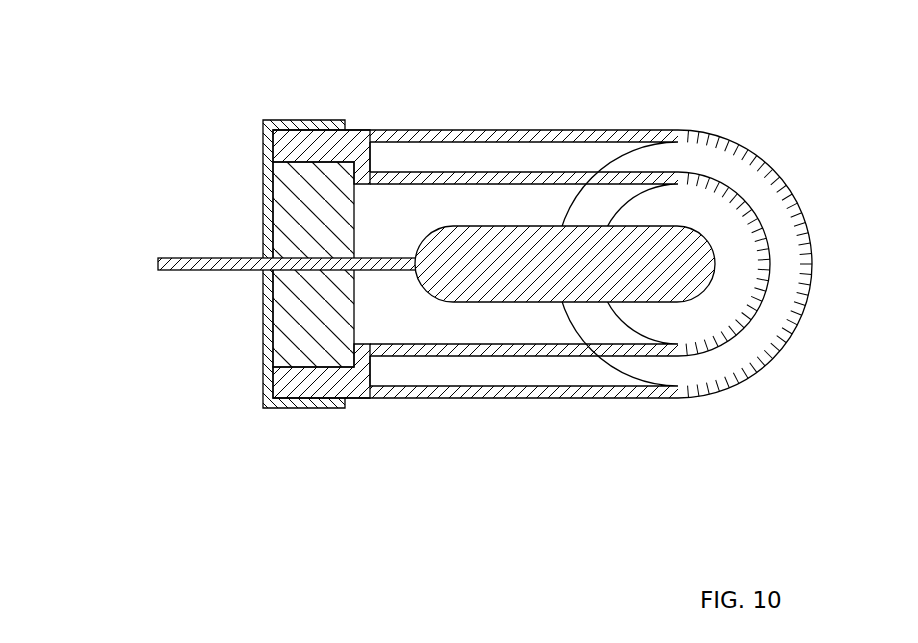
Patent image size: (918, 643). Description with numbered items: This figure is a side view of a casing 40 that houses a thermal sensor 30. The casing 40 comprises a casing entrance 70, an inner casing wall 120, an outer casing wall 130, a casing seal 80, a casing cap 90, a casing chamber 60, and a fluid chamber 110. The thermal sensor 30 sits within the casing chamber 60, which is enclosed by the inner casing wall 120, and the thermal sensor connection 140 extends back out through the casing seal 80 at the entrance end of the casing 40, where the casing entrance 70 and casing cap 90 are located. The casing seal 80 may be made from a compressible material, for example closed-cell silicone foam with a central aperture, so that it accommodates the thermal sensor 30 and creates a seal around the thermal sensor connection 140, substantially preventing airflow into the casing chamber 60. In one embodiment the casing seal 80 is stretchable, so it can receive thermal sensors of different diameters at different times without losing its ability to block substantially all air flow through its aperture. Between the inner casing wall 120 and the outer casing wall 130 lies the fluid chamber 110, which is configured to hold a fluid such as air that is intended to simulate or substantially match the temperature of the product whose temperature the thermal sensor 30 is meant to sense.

The casing 40 is at (260, 73).
The casing entrance 70 is at (263, 203).
The casing seal 80 is at (273, 310).
The casing cap 90 is at (313, 408).
The outer casing wall 130 is at (610, 130).
The fluid chamber 110 is at (525, 160).
The inner casing wall 120 is at (480, 184).
The thermal sensor connection 140 is at (158, 258).
The thermal sensor 30 is at (485, 305).
The casing chamber 60 is at (707, 305).